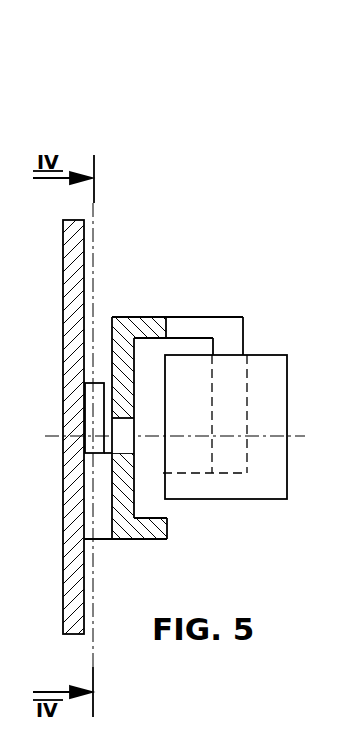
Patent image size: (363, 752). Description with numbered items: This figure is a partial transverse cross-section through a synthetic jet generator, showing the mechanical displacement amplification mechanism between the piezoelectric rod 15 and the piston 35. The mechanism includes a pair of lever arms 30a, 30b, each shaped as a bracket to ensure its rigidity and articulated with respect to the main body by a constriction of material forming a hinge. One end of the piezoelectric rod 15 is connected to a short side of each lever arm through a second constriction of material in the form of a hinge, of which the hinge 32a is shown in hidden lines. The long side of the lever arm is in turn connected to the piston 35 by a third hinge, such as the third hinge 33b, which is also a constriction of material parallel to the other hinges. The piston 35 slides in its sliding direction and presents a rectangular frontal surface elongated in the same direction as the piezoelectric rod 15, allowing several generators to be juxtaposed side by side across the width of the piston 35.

The piston 35 is at (74, 252).
The third hinge 33b is at (97, 392).
The lever arm 30a is at (150, 328).
The lever arm 30b is at (142, 532).
The second hinge 32a is at (229, 376).
The piezoelectric rod 15 is at (266, 390).